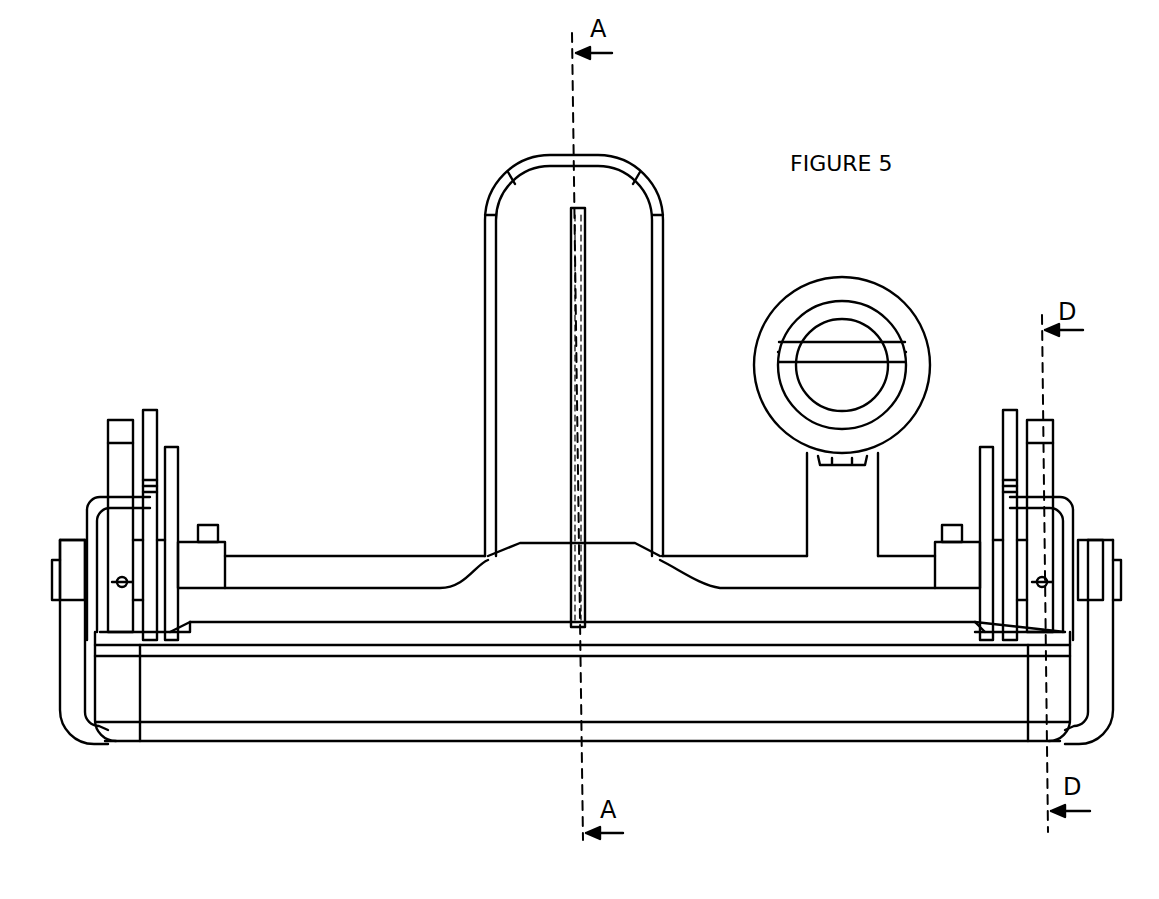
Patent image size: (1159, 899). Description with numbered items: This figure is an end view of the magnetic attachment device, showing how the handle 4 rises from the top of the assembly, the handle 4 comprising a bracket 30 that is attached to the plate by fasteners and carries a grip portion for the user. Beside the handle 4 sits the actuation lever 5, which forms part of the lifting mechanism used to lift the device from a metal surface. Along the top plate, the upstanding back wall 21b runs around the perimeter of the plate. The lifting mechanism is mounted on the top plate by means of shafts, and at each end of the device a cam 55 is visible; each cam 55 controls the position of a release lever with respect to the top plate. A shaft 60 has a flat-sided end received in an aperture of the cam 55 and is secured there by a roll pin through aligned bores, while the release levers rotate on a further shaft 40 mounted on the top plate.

The handle 4 is at (676, 228).
The actuation lever 5 is at (945, 289).
The bracket 30 is at (570, 405).
The shaft 40 is at (240, 613).
The cam 55 is at (101, 409).
The shaft 60 is at (288, 570).
The back wall 21b is at (647, 585).